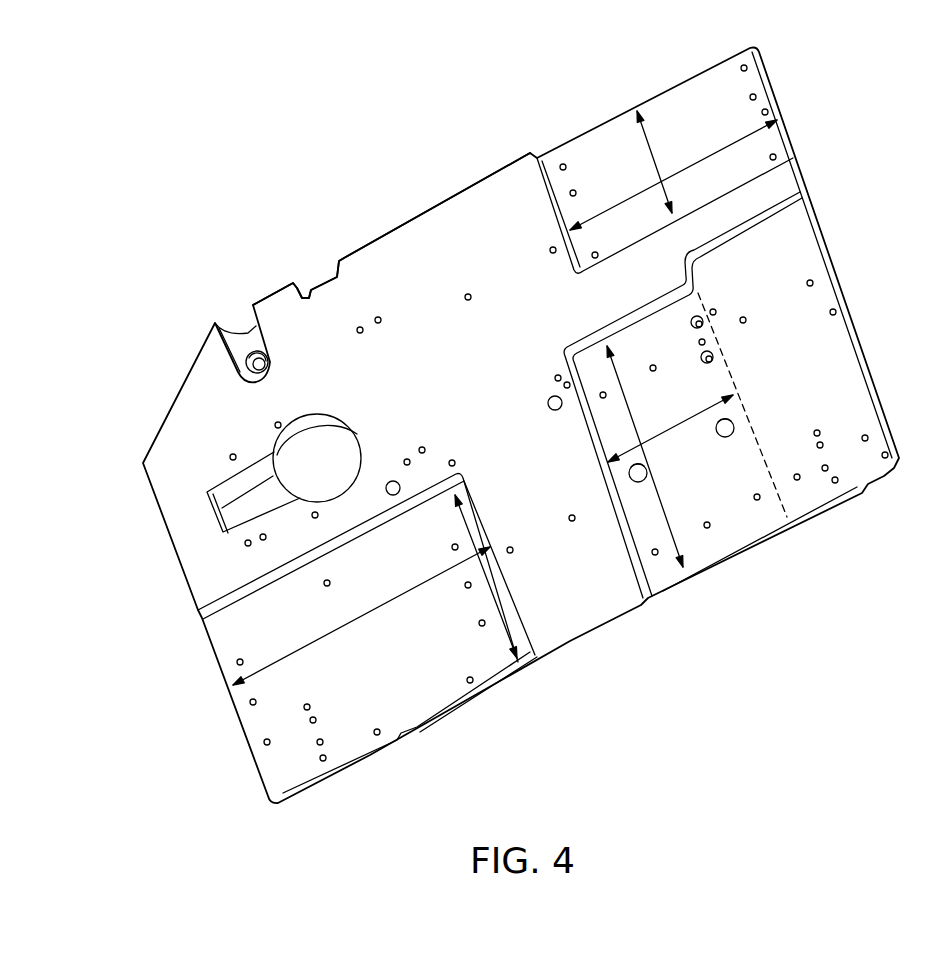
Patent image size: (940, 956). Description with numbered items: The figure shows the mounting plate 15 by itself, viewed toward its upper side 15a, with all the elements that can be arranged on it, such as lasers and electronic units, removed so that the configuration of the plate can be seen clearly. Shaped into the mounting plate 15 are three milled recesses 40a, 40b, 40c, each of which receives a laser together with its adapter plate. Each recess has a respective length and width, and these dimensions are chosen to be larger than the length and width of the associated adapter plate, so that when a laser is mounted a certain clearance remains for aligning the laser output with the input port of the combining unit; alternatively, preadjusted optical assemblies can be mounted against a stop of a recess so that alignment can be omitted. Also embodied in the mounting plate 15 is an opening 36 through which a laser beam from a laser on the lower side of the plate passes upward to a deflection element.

The mounting plate 15 is at (455, 194).
The upper side 15a is at (405, 292).
The opening 36 is at (258, 475).
The milled recess 40a is at (680, 150).
The milled recess 40b is at (726, 395).
The milled recess 40c is at (345, 634).